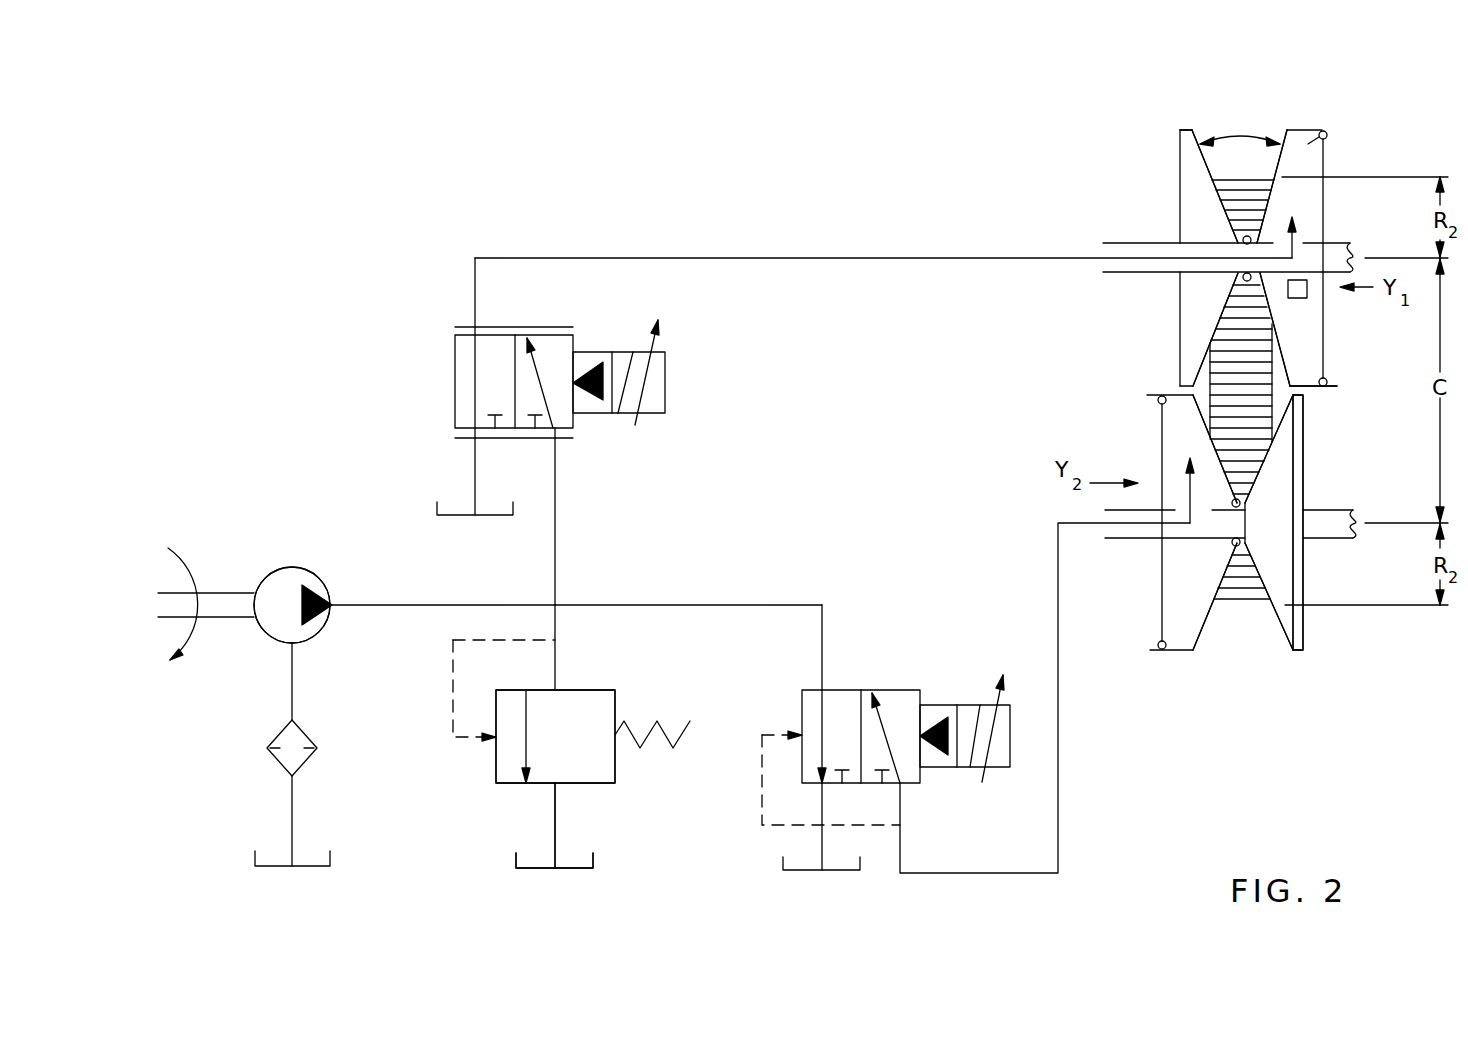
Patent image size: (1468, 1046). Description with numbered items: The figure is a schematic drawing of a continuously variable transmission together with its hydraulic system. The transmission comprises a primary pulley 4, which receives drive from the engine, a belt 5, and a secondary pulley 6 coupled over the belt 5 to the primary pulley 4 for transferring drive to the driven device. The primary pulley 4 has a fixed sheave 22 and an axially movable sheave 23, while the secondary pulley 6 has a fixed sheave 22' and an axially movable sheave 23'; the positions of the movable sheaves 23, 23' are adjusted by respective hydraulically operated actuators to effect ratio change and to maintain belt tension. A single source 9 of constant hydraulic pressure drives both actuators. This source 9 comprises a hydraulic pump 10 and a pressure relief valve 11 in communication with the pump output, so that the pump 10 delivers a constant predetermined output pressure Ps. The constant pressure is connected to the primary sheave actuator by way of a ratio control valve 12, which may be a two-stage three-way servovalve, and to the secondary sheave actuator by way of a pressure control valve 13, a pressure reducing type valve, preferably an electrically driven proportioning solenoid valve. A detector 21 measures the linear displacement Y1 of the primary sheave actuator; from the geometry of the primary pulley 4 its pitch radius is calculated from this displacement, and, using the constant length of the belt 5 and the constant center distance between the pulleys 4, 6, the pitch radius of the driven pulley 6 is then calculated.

The primary pulley 4 is at (1222, 103).
The belt 5 is at (1253, 177).
The secondary pulley 6 is at (1249, 678).
The source of constant hydraulic pressure 9 is at (610, 866).
The hydraulic pump 10 is at (257, 582).
The pressure relief valve 11 is at (615, 772).
The ratio control valve 12 is at (665, 352).
The pressure control valve 13 is at (940, 767).
The detector 21 is at (1298, 298).
The fixed sheave 22 is at (1155, 250).
The fixed sheave 22' is at (1317, 553).
The axially movable sheave 23 is at (1341, 214).
The axially movable sheave 23' is at (1157, 565).